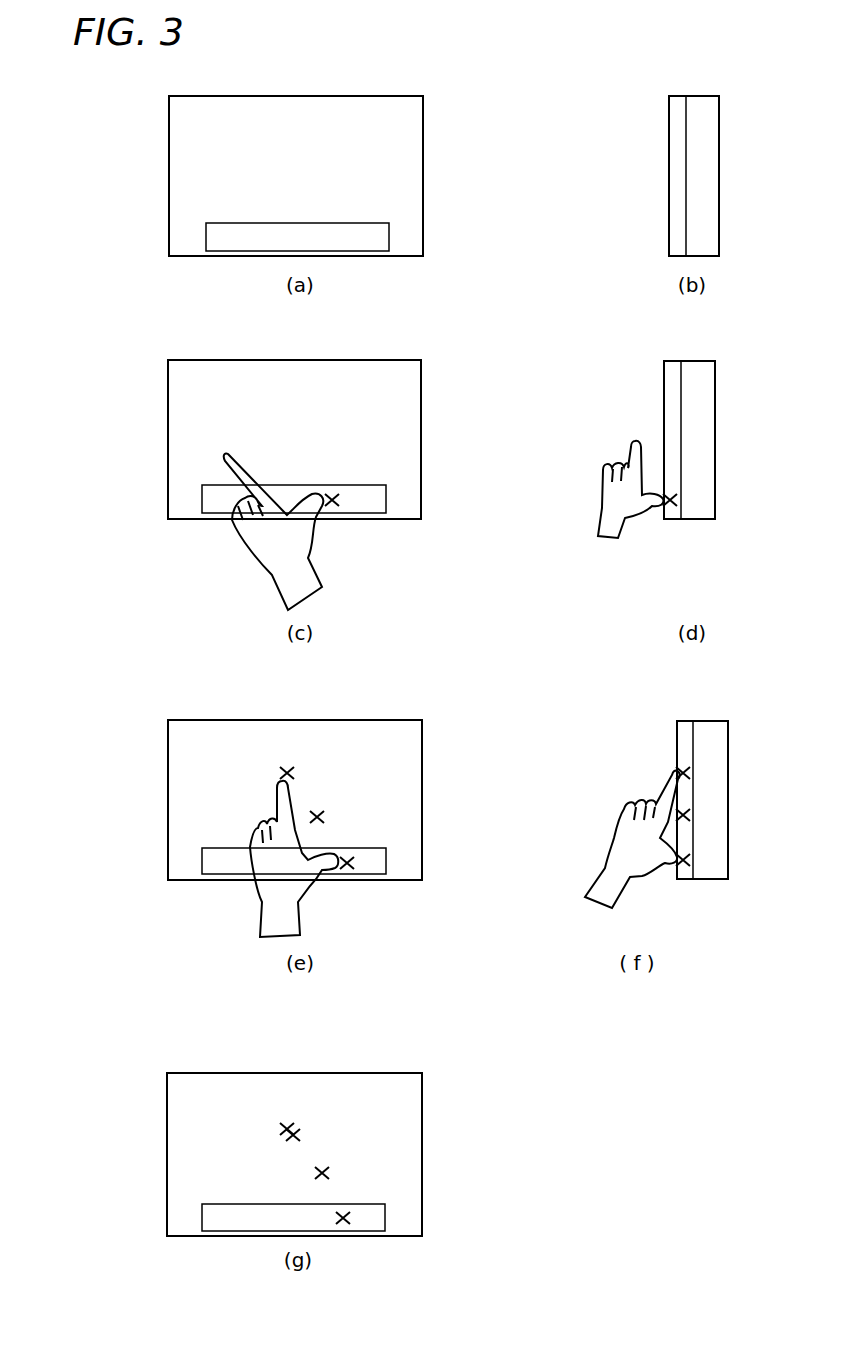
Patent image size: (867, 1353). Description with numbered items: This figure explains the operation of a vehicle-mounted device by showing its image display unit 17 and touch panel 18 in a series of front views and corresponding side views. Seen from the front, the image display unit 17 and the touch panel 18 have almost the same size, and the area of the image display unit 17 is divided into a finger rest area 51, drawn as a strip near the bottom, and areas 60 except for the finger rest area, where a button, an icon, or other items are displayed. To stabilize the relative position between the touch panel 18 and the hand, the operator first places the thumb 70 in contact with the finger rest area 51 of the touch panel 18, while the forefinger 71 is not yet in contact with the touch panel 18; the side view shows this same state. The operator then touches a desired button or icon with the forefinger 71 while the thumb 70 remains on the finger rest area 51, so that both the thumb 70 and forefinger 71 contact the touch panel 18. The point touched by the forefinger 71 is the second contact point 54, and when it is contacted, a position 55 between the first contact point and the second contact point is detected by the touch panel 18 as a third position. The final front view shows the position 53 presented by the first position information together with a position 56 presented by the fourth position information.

The image display unit 17 is at (392, 95).
The touch panel 18 is at (675, 108).
The finger rest area 51 is at (358, 232).
The position presented by first position information 53 is at (337, 500).
The second contact point 54 is at (290, 772).
The position detected as third position 55 is at (320, 815).
The position presented by fourth position information 56 is at (285, 1130).
The areas except for the finger rest area 60 is at (355, 176).
The thumb 70 is at (327, 518).
The forefinger 71 is at (225, 456).